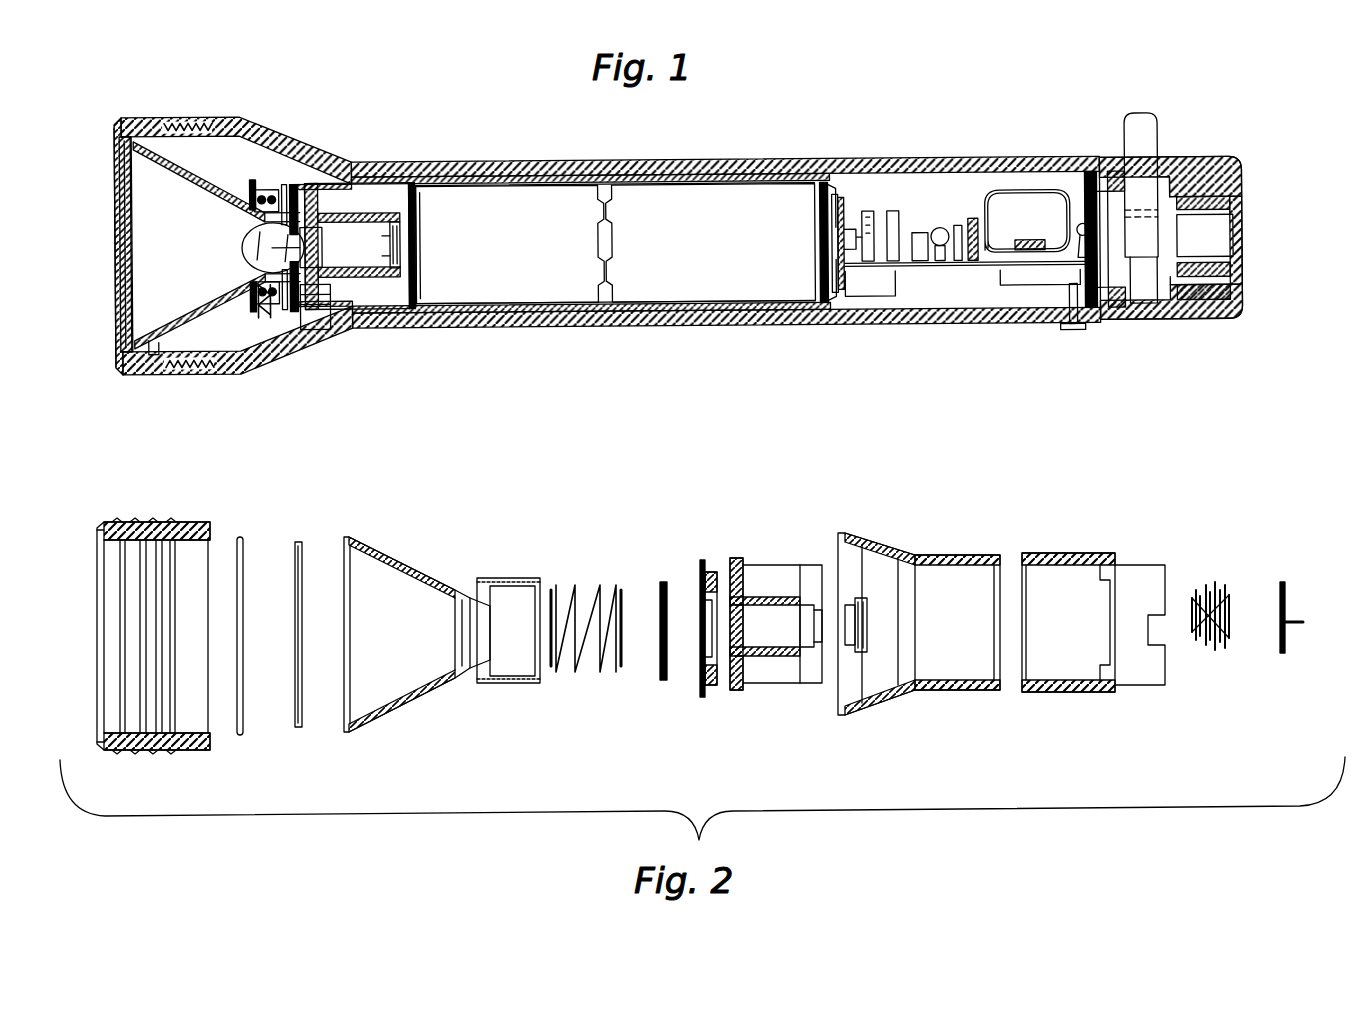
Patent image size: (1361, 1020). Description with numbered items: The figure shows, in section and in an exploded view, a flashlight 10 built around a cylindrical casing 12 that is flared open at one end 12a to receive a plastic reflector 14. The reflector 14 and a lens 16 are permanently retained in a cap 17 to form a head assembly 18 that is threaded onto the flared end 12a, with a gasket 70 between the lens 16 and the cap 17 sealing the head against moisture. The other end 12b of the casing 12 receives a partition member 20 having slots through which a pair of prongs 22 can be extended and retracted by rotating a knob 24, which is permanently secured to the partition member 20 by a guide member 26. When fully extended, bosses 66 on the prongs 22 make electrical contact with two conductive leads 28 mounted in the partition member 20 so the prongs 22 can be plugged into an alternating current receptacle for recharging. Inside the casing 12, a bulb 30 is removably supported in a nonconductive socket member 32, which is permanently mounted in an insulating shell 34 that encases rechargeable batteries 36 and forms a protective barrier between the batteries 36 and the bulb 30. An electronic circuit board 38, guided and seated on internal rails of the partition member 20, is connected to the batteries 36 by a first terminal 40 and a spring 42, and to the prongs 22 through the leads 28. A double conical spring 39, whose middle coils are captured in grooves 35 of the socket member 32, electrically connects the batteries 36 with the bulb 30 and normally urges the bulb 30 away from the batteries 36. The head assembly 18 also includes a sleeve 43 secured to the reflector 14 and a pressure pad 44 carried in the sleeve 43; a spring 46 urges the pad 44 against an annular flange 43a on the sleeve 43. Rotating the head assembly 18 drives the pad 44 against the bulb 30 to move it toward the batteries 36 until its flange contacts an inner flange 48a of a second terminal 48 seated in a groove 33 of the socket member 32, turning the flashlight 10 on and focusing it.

In FIG. 1, the flashlight 10 is at (456, 82).
In FIG. 1, the casing 12 is at (688, 159).
In FIG. 1, the flared end of casing 12a is at (280, 162).
In FIG. 1, the other end of casing 12b is at (978, 157).
In FIG. 1, the reflector 14 is at (220, 190).
In FIG. 2, the reflector 14 is at (396, 548).
In FIG. 1, the lens 16 is at (119, 248).
In FIG. 2, the lens 16 is at (299, 541).
In FIG. 1, the cap 17 is at (138, 117).
In FIG. 2, the cap 17 is at (122, 522).
In FIG. 1, the head assembly 18 is at (190, 114).
In FIG. 1, the partition member 20 is at (1175, 160).
In FIG. 1, the prongs 22 is at (1128, 115).
In FIG. 1, the knob 24 is at (1222, 156).
In FIG. 1, the guide member 26 is at (1160, 300).
In FIG. 1, the conductive leads 28 is at (1108, 178).
In FIG. 1, the bulb 30 is at (242, 246).
In FIG. 1, the socket member 32 is at (355, 196).
In FIG. 2, the socket member 32 is at (770, 562).
In FIG. 2, the groove 33 is at (737, 680).
In FIG. 1, the insulating shell 34 is at (540, 161).
In FIG. 2, the insulating shell 34 is at (940, 555).
In FIG. 2, the grooves 35 is at (800, 650).
In FIG. 1, the rechargeable batteries 36 is at (616, 244).
In FIG. 1, the electronic circuit board 38 is at (962, 276).
In FIG. 1, the double conical spring 39 is at (408, 242).
In FIG. 2, the double conical spring 39 is at (868, 622).
In FIG. 1, the first terminal 40 is at (850, 210).
In FIG. 2, the first terminal 40 is at (1288, 620).
In FIG. 1, the spring 42 is at (818, 252).
In FIG. 2, the spring 42 is at (1220, 580).
In FIG. 1, the sleeve 43 is at (290, 315).
In FIG. 2, the sleeve 43 is at (498, 577).
In FIG. 2, the annular flange 43a is at (501, 633).
In FIG. 1, the pressure pad 44 is at (300, 305).
In FIG. 2, the pressure pad 44 is at (660, 582).
In FIG. 1, the spring 46 is at (262, 310).
In FIG. 2, the spring 46 is at (580, 590).
In FIG. 1, the second terminal 48 is at (320, 295).
In FIG. 2, the second terminal 48 is at (703, 560).
In FIG. 2, the inner flange 48a is at (702, 662).
In FIG. 1, the bosses 66 is at (1068, 338).
In FIG. 2, the gasket 70 is at (240, 537).